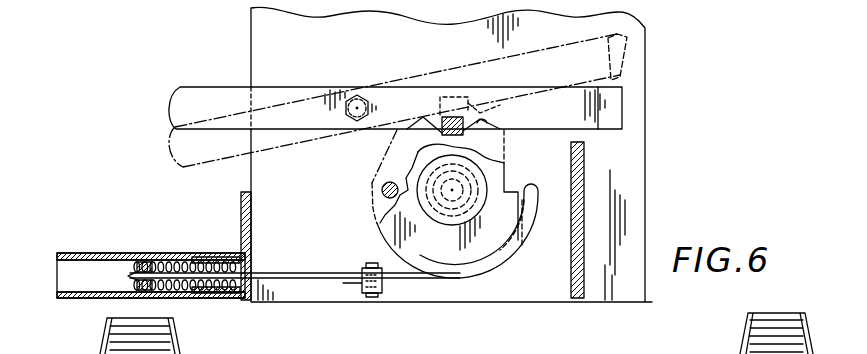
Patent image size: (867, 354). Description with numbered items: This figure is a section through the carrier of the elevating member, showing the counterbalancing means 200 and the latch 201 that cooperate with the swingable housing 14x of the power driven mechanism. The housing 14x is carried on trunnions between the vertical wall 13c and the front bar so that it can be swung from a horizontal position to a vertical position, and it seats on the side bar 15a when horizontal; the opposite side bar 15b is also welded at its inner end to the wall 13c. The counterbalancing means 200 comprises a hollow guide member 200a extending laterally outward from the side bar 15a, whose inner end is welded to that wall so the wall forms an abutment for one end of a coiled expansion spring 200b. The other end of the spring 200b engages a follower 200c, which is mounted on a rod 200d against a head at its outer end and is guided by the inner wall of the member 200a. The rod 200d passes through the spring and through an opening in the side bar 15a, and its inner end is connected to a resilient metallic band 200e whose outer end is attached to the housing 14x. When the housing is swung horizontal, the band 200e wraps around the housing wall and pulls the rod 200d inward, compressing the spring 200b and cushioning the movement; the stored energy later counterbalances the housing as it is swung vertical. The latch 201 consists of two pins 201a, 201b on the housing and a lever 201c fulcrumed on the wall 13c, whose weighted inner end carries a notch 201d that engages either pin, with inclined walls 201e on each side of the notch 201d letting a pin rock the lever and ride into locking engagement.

The vertical wall 13c is at (623, 148).
The housing 14x is at (457, 258).
The side bar 15a is at (240, 207).
The side bar 15b is at (585, 299).
The counterbalancing means 200 is at (337, 266).
The hollow guide member 200a is at (110, 253).
The coiled expansion spring 200b is at (173, 262).
The follower 200c is at (135, 285).
The rod 200d is at (304, 276).
The resilient metallic band 200e is at (493, 268).
The latch 201 is at (357, 158).
The pin 201a is at (383, 188).
The pin 201b is at (505, 138).
The lever 201c is at (306, 92).
The notch 201d is at (447, 117).
The inclined walls 201e is at (497, 122).